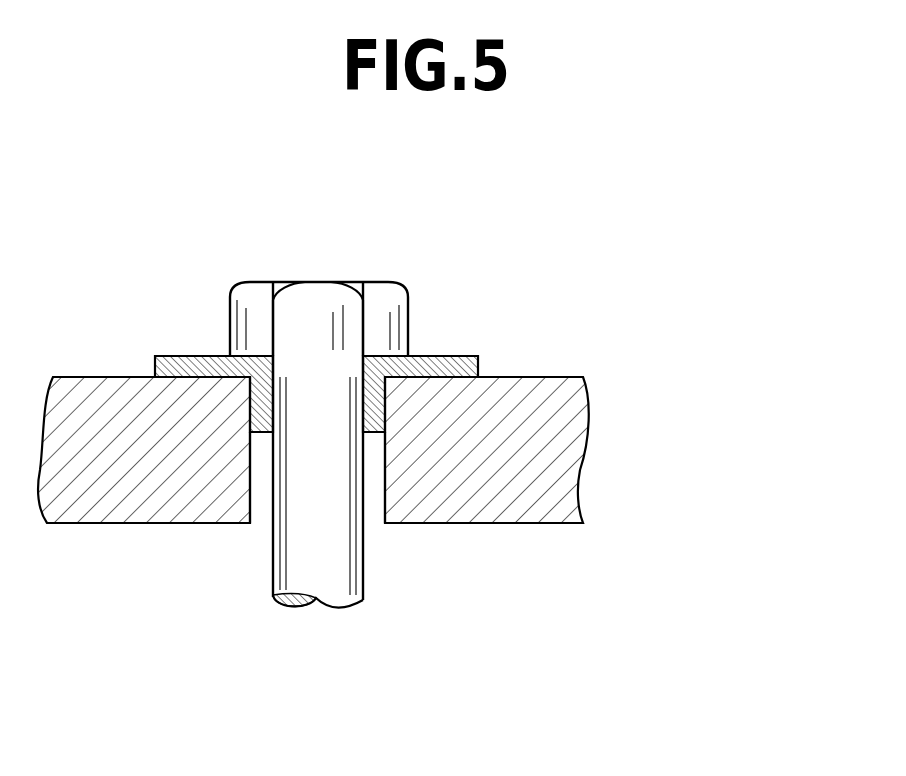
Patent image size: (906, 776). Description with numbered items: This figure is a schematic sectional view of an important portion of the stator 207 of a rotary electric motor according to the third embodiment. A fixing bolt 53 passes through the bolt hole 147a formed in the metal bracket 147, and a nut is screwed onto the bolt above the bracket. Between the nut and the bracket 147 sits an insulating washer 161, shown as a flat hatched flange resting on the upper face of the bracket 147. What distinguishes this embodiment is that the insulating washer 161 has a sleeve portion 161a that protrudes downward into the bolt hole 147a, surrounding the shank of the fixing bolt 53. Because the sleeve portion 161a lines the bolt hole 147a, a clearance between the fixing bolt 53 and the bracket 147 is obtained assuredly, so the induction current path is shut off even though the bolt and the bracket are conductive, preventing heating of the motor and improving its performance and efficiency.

The stator 207 is at (556, 287).
The bracket 147 is at (497, 427).
The bolt hole 147a is at (375, 507).
The insulating washer 161 is at (457, 353).
The sleeve portion 161a is at (385, 421).
The fixing bolt 53 is at (295, 543).